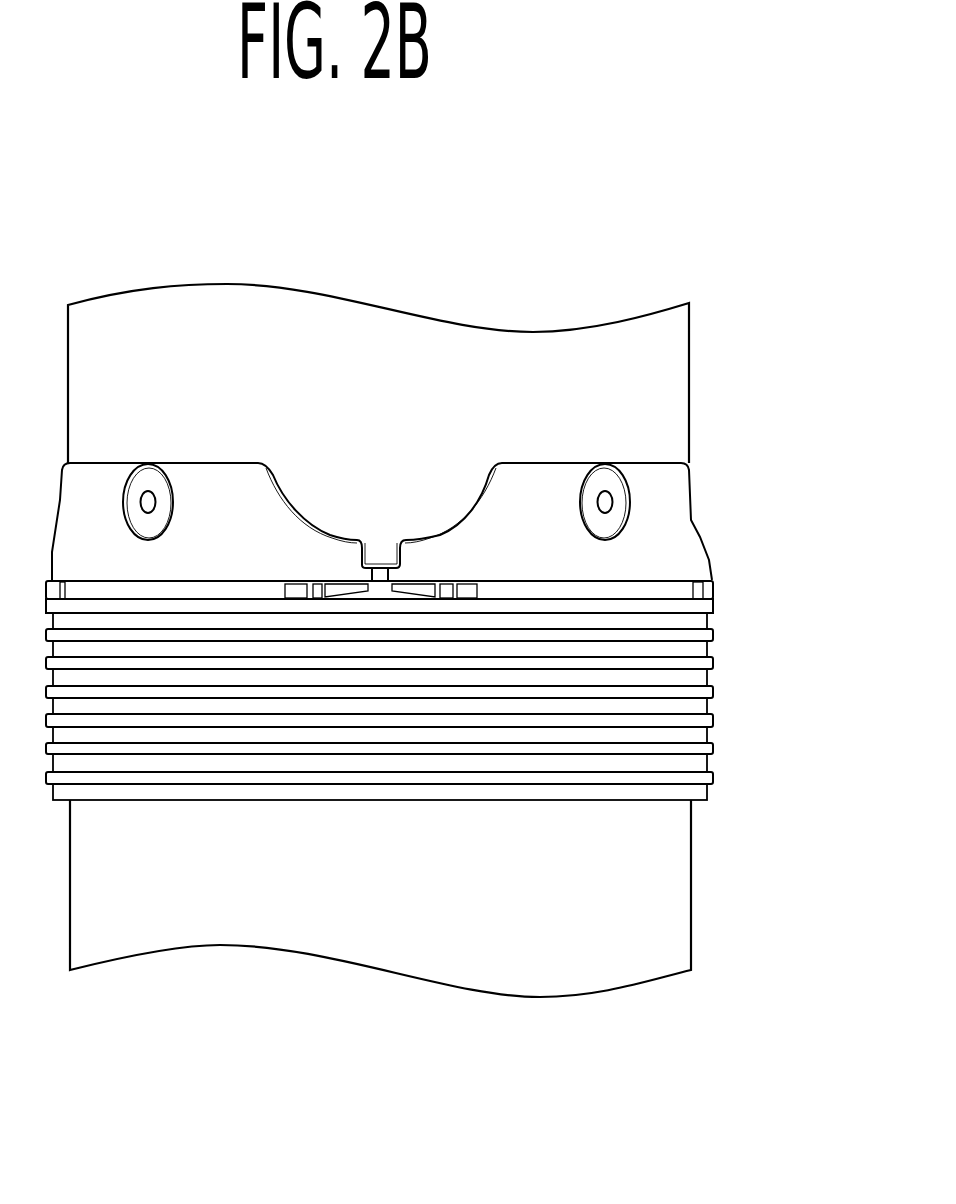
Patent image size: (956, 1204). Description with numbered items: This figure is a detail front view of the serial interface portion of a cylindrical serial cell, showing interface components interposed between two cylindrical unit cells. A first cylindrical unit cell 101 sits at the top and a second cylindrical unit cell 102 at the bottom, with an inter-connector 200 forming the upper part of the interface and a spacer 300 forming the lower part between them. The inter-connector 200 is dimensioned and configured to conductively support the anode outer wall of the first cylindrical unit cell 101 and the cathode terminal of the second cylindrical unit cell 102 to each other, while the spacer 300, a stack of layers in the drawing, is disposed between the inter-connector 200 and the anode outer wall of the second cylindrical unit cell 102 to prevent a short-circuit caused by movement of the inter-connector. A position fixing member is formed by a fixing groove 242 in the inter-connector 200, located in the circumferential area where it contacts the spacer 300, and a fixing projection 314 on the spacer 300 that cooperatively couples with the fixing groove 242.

The first cylindrical unit cell 101 is at (690, 388).
The second cylindrical unit cell 102 is at (691, 883).
The inter-connector 200 is at (708, 537).
The fixing groove 242 is at (379, 552).
The spacer 300 is at (713, 718).
The fixing projection 314 is at (383, 583).